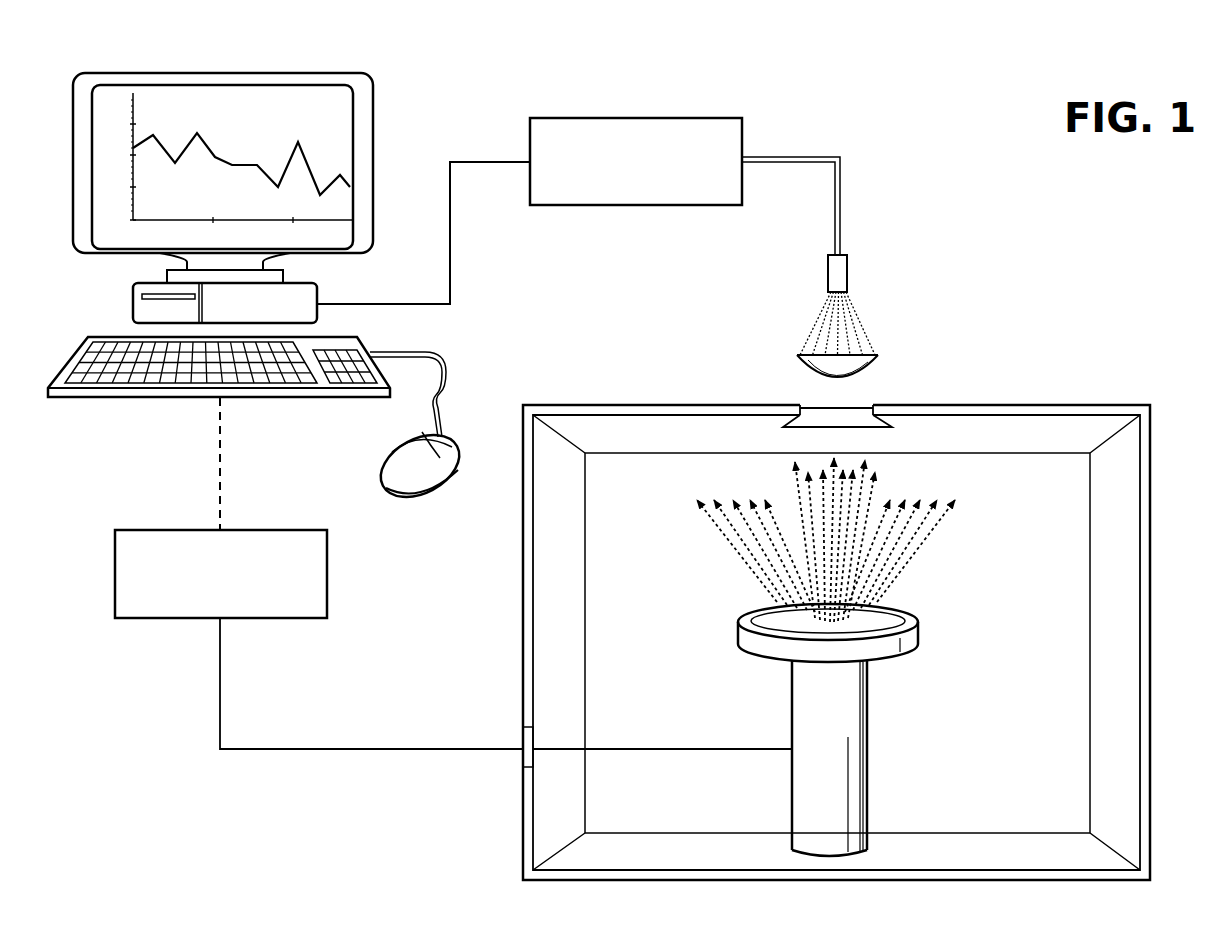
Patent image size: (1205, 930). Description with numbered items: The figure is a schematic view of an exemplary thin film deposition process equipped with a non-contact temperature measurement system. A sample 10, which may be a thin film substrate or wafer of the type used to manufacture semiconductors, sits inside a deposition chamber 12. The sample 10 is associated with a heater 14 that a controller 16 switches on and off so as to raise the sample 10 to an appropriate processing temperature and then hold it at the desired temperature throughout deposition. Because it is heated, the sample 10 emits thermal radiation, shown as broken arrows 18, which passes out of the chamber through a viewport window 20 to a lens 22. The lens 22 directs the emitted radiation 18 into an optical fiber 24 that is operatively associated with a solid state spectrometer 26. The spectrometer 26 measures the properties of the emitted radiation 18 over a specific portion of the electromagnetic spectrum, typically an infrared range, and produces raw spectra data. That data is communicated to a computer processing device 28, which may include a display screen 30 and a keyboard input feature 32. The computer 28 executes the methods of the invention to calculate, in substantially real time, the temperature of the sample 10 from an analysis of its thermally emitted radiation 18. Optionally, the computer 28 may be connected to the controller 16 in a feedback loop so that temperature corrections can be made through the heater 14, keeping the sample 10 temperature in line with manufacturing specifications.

The sample 10 is at (890, 622).
The deposition chamber 12 is at (1152, 640).
The heater 14 is at (850, 700).
The controller 16 is at (327, 573).
The emitted radiation 18 is at (735, 500).
The viewport window 20 is at (843, 410).
The lens 22 is at (800, 372).
The optical fiber 24 is at (842, 200).
The spectrometer 26 is at (630, 118).
The computer processing device 28 is at (132, 305).
The display screen 30 is at (283, 100).
The keyboard input feature 32 is at (103, 397).